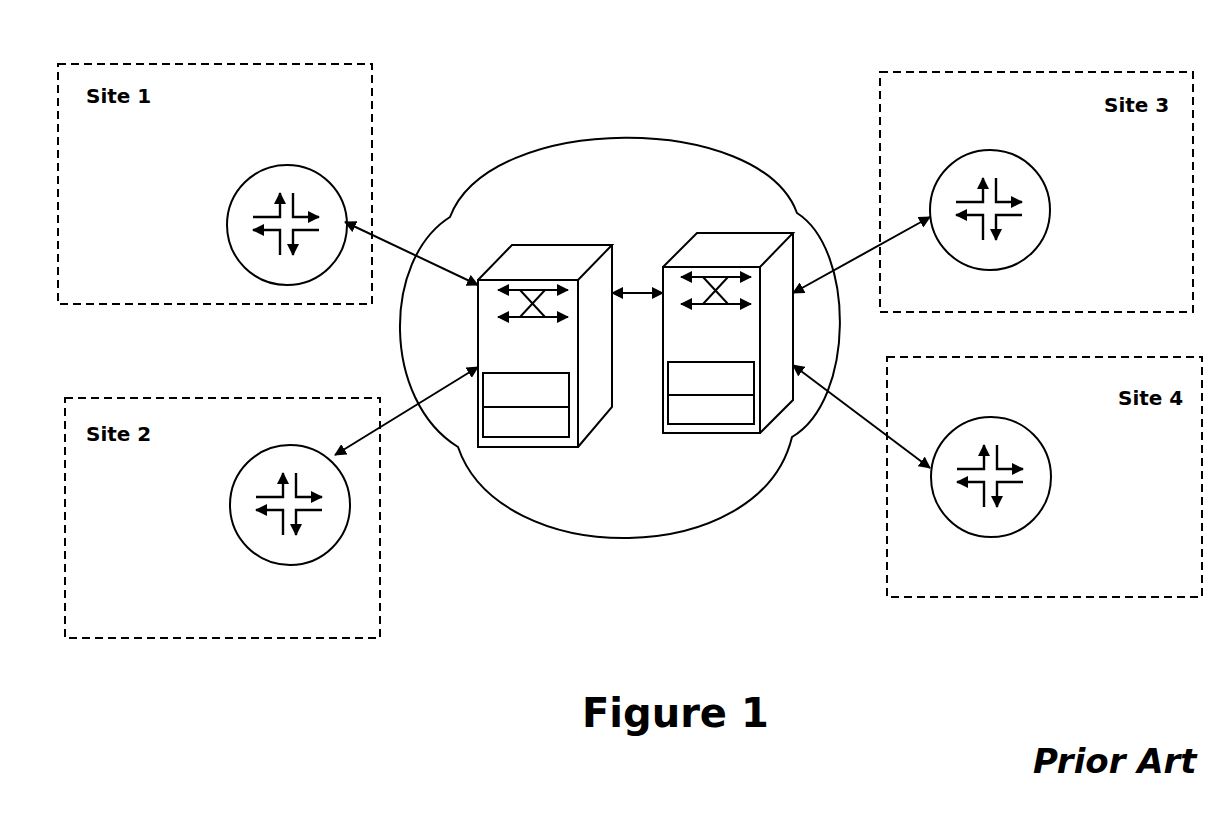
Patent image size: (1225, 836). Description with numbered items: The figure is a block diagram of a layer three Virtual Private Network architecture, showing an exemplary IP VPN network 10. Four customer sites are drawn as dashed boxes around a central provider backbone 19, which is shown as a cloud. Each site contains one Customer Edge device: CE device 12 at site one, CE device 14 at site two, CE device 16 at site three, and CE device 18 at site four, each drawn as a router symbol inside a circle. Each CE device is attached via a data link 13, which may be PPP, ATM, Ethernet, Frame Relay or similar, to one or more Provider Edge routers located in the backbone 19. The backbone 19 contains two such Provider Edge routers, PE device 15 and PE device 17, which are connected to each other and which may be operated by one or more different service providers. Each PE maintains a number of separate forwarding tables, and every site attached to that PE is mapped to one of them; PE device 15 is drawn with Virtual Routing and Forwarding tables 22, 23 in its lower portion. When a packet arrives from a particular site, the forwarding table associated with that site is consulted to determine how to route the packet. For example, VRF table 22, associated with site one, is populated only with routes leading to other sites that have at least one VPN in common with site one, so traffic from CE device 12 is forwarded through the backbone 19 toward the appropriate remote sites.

The IP VPN network 10 is at (690, 66).
The CE device 12 is at (307, 167).
The data link 13 is at (383, 237).
The CE device 14 is at (288, 445).
The PE device 15 is at (543, 246).
The CE device 16 is at (993, 150).
The PE device 17 is at (728, 233).
The CE device 18 is at (988, 417).
The backbone 19 is at (573, 140).
The Virtual Routing and Forwarding (VRF) table 22 is at (569, 400).
The Virtual Routing and Forwarding (VRF) table 23 is at (569, 423).